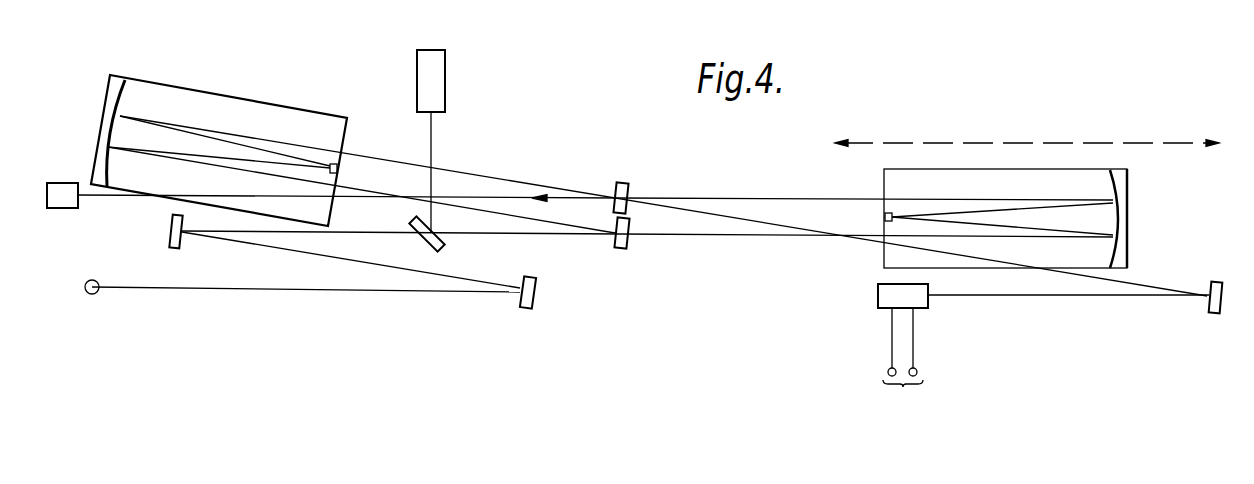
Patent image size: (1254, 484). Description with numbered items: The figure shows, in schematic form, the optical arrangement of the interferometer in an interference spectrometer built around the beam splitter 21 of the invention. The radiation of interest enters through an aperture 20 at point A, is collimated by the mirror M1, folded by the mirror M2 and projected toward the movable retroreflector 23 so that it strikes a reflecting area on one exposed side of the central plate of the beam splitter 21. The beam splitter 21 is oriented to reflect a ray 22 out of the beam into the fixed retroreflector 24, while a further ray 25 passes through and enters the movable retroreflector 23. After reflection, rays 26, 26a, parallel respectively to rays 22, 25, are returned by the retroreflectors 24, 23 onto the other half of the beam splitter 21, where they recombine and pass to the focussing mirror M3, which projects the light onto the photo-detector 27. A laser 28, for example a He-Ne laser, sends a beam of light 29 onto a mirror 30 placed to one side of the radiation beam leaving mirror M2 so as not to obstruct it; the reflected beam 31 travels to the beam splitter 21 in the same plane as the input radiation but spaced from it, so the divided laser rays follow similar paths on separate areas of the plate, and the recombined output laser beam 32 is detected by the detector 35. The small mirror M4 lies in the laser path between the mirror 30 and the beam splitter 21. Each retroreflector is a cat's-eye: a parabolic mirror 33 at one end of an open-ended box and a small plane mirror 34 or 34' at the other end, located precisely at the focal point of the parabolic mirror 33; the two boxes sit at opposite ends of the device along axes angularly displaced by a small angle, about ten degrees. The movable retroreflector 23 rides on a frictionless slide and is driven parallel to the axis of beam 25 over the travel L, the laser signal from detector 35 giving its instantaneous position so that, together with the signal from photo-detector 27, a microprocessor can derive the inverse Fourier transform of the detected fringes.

The aperture 20 is at (92, 280).
The beam splitter 21 is at (628, 249).
The ray 22 is at (463, 206).
The movable retroreflector 23 is at (922, 168).
The fixed retroreflector 24 is at (181, 88).
The ray 25 is at (708, 237).
The ray 26 is at (530, 181).
The ray 26a is at (707, 198).
The photo-detector 27 is at (903, 297).
The laser 28 is at (445, 73).
The beam of light 29 is at (433, 143).
The mirror 30 is at (414, 236).
The reflected beam 31 is at (543, 234).
The recombined output laser beam 32 is at (93, 204).
The parabolic mirror 33 is at (97, 137).
The small plane mirror 34 is at (860, 191).
The small plane mirror 34' is at (362, 145).
The detector 35 is at (67, 183).
The point A is at (302, 303).
The length L is at (1027, 134).
The mirror M1 is at (537, 303).
The mirror M2 is at (169, 230).
The focussing mirror M3 is at (1222, 308).
The mirror M4 is at (429, 249).